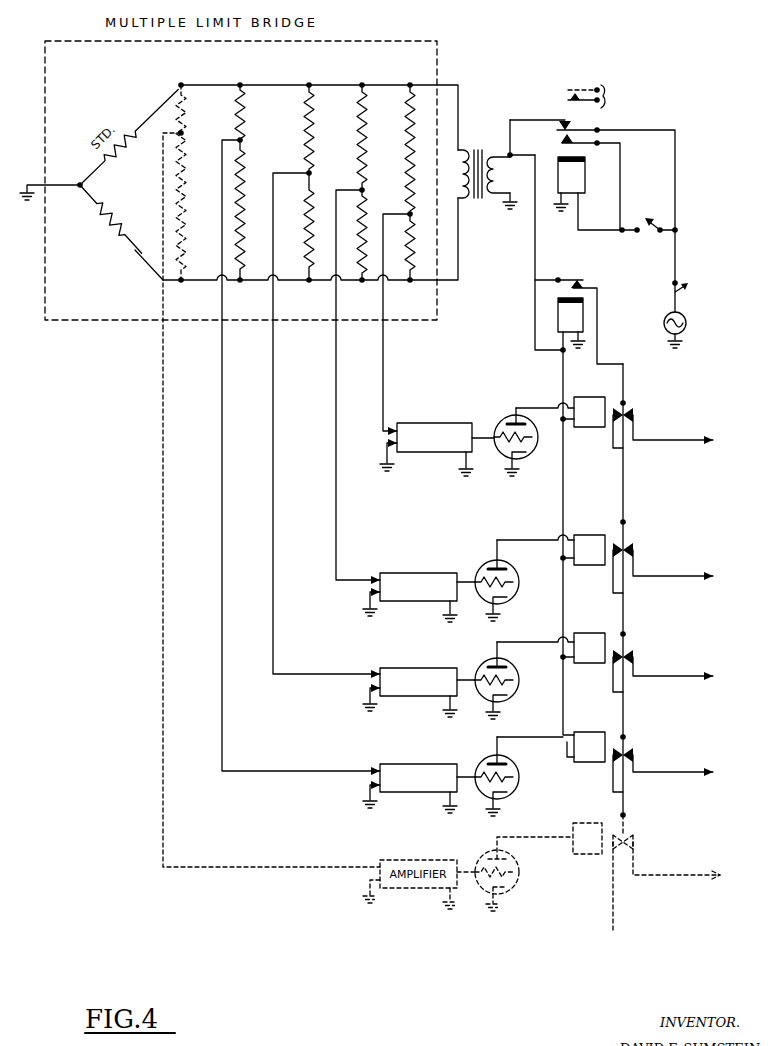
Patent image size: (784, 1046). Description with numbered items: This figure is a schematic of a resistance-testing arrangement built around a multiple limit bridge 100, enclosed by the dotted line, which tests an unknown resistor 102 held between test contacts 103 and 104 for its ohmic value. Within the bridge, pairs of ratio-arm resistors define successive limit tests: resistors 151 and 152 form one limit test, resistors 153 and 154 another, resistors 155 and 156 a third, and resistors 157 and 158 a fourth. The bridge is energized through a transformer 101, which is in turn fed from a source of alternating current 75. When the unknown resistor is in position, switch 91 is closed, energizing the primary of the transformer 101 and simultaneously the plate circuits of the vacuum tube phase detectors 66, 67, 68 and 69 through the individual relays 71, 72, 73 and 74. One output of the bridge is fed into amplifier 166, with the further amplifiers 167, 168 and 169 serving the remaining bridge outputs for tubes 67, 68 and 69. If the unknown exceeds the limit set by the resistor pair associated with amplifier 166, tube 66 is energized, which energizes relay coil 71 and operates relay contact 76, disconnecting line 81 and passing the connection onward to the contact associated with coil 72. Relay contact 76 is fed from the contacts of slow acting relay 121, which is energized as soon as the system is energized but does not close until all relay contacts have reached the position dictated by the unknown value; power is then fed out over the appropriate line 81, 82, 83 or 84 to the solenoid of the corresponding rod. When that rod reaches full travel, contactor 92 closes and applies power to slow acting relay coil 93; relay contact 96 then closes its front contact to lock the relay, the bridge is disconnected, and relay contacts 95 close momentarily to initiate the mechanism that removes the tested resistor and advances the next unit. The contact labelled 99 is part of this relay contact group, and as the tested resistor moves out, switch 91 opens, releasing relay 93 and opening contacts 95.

The multiple limit bridge 100 is at (388, 41).
The transformer 101 is at (470, 207).
The resistor 102 is at (118, 250).
The test contact 103 is at (97, 212).
The test contact 104 is at (135, 250).
The resistor 151 is at (249, 171).
The resistor 152 is at (248, 116).
The resistor 153 is at (325, 194).
The resistor 154 is at (314, 116).
The resistor 155 is at (367, 215).
The resistor 156 is at (367, 114).
The resistor 157 is at (404, 254).
The resistor 158 is at (415, 114).
The slow acting relay 121 is at (562, 315).
The relay coil 93 is at (566, 174).
The relay contacts 95 is at (563, 89).
The relay contact 99 is at (564, 120).
The relay contact 96 is at (561, 143).
The contactor 92 is at (647, 234).
The switch 91 is at (684, 293).
The source of alternating current 75 is at (686, 322).
The relay contact 76 is at (623, 403).
The line 81 is at (688, 432).
The line 82 is at (688, 567).
The line 83 is at (688, 671).
The line 84 is at (688, 768).
The relay coil 71 is at (600, 427).
The relay 72 is at (598, 565).
The relay 73 is at (598, 663).
The relay 74 is at (598, 762).
The vacuum tube phase detector 66 is at (495, 432).
The vacuum tube phase detector 67 is at (480, 568).
The vacuum tube phase detector 68 is at (480, 668).
The vacuum tube phase detector 69 is at (480, 766).
The amplifier 166 is at (425, 423).
The amplifier 167 is at (413, 573).
The amplifier 168 is at (413, 668).
The amplifier 169 is at (413, 764).